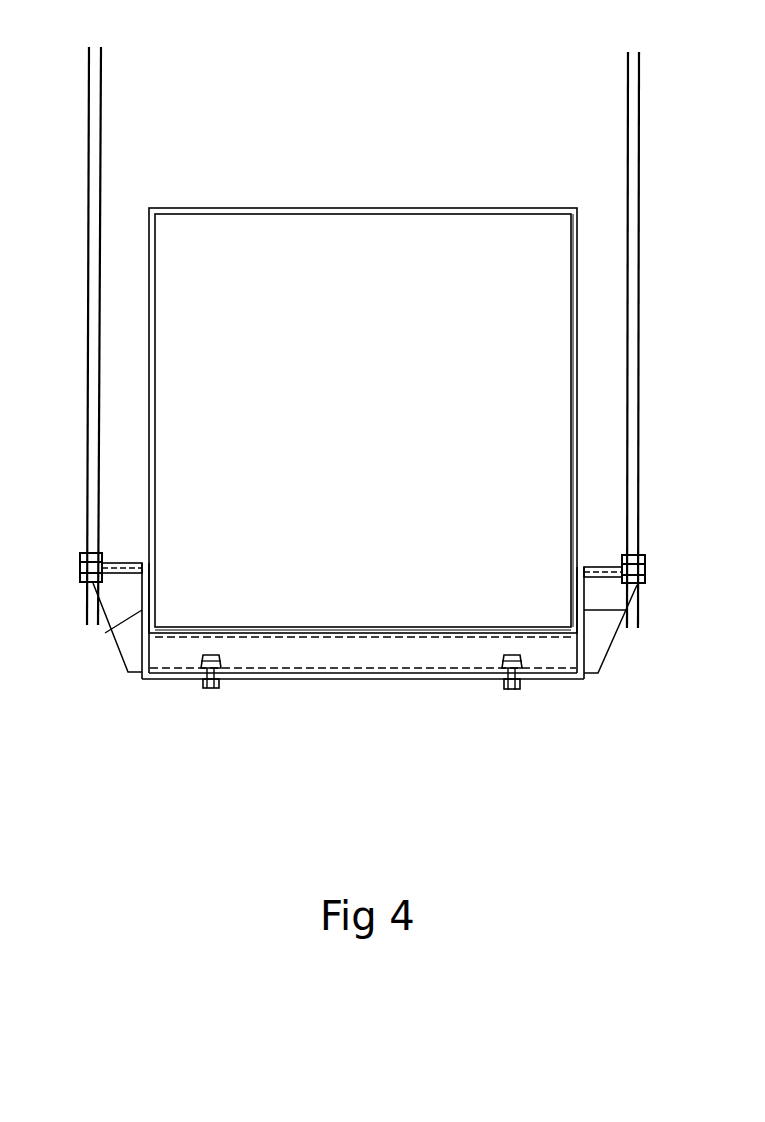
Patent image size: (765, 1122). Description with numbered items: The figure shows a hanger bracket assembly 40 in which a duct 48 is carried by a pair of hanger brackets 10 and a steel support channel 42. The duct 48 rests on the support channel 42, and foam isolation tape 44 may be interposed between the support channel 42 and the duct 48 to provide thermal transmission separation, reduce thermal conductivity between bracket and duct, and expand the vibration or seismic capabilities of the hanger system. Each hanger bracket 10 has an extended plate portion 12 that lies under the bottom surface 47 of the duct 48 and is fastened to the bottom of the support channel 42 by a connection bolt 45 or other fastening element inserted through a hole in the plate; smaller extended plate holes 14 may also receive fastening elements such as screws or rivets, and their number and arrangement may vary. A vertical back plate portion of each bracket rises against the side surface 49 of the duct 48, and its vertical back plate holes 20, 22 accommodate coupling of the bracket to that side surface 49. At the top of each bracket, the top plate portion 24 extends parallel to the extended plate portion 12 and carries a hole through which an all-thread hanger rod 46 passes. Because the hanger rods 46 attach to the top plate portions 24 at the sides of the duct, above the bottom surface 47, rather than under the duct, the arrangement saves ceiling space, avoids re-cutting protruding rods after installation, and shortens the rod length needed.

The hanger bracket 10 is at (142, 646).
The extended plate portion 12 is at (178, 676).
The extended plate holes 14 is at (493, 682).
The vertical back plate hole 20 is at (113, 655).
The vertical back plate hole 22 is at (108, 633).
The top plate portion 24 is at (117, 565).
The assembly 40 is at (371, 19).
The support channel 42 is at (365, 680).
The foam isolation tape 44 is at (576, 598).
The connection bolt 45 is at (513, 690).
The hanger rod 46 is at (102, 133).
The bottom surface 47 is at (223, 627).
The duct 48 is at (152, 393).
The side surface 49 is at (577, 513).